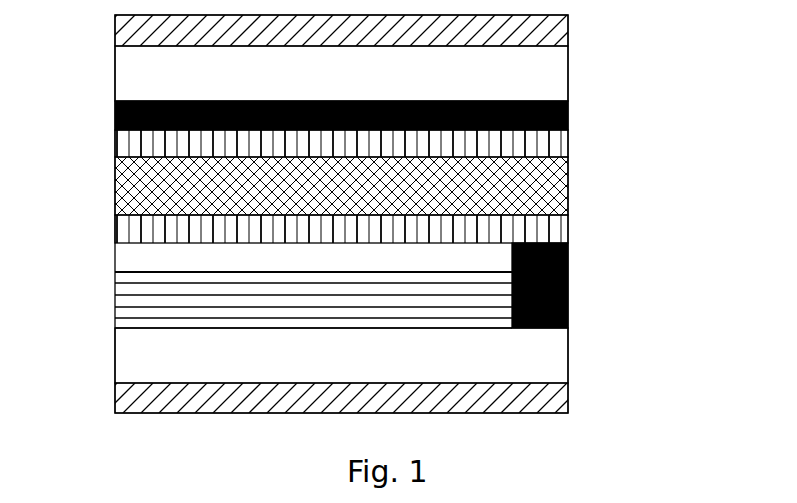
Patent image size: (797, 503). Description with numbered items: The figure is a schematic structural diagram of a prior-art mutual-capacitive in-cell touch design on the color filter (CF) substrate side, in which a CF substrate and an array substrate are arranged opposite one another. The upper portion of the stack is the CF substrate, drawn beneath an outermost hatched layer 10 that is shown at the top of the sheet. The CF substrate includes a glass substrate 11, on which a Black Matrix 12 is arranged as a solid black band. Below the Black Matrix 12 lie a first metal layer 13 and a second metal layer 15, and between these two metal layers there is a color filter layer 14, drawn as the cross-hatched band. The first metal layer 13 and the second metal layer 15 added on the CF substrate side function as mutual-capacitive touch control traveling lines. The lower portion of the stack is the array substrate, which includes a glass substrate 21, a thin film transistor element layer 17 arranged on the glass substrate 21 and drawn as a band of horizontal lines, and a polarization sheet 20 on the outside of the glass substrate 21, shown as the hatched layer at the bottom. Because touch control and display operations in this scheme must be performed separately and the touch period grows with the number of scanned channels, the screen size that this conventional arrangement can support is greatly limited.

The upper substrate 10 is at (542, 34).
The glass substrate 11 is at (540, 73).
The Black Matrix 12 is at (550, 113).
The first metal layer 13 is at (540, 147).
The color filter layer 14 is at (538, 187).
The second metal layer 15 is at (540, 232).
The thin film transistor element layer 17 is at (132, 300).
The polarization sheet 20 is at (540, 402).
The glass substrate 21 is at (522, 357).